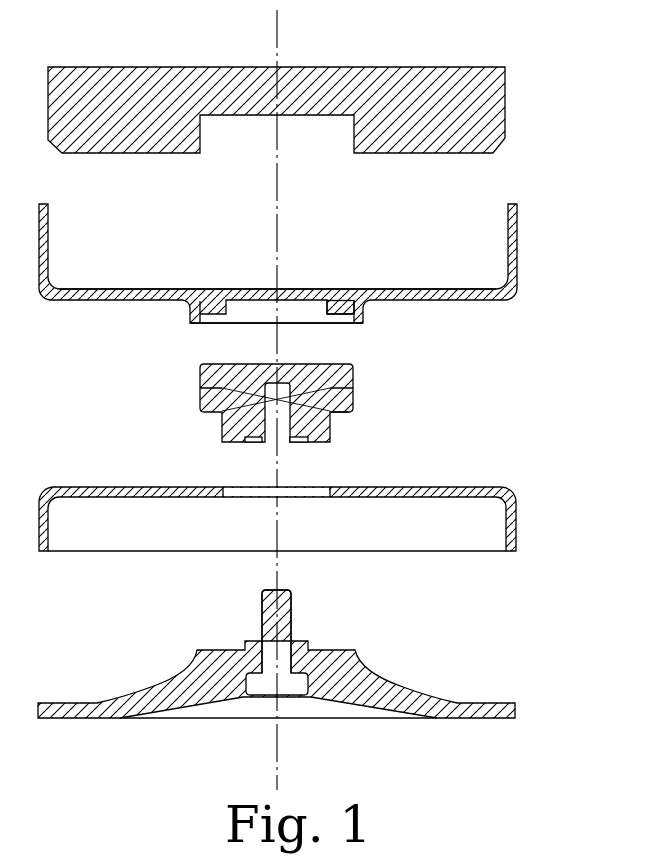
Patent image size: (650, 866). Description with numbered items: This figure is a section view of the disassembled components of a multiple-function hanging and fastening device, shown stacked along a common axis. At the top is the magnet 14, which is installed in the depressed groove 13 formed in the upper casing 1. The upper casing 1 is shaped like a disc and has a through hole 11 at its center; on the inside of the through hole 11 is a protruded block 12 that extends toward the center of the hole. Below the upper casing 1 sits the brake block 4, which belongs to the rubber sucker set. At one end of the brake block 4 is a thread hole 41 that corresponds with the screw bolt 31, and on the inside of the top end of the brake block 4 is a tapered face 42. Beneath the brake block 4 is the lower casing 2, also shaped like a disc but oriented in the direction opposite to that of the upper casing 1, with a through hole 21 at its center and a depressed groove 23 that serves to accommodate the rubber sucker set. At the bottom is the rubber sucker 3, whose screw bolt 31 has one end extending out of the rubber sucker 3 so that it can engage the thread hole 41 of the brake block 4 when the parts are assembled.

The upper casing 1 is at (303, 265).
The through hole 11 is at (303, 307).
The protruded block 12 is at (347, 308).
The depressed groove 13 is at (244, 235).
The magnet 14 is at (103, 93).
The lower casing 2 is at (277, 513).
The through hole 21 is at (243, 493).
The depressed groove 23 is at (427, 525).
The rubber sucker 3 is at (276, 643).
The screw bolt 31 is at (287, 625).
The brake block 4 is at (273, 399).
The thread hole 41 is at (282, 440).
The tapered face 42 is at (330, 412).